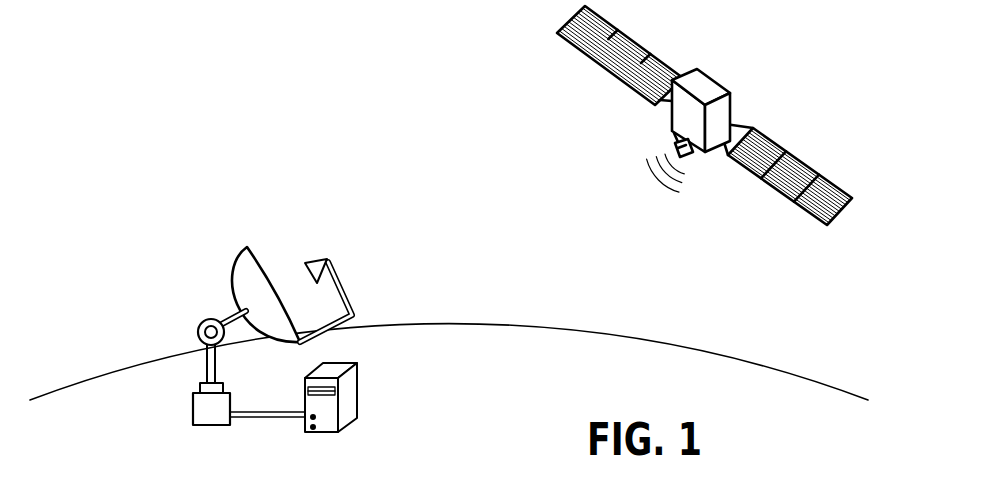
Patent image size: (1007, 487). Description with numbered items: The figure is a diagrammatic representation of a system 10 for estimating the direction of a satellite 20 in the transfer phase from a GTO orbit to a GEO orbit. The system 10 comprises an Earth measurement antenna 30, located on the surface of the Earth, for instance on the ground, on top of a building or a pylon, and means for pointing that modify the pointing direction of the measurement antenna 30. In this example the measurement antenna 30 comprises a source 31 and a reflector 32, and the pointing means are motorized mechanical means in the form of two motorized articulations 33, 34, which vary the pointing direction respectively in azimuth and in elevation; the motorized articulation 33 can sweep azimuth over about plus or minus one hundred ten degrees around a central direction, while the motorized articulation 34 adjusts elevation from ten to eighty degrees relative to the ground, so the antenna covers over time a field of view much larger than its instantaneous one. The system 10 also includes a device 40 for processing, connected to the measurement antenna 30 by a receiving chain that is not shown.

The system for estimating 10 is at (282, 271).
The satellite 20 is at (712, 77).
The Earth measurement antenna 30 is at (263, 268).
The source 31 is at (332, 260).
The reflector 32 is at (252, 255).
The motorized articulation 33 is at (200, 387).
The motorized articulation 34 is at (200, 325).
The device for processing 40 is at (347, 392).